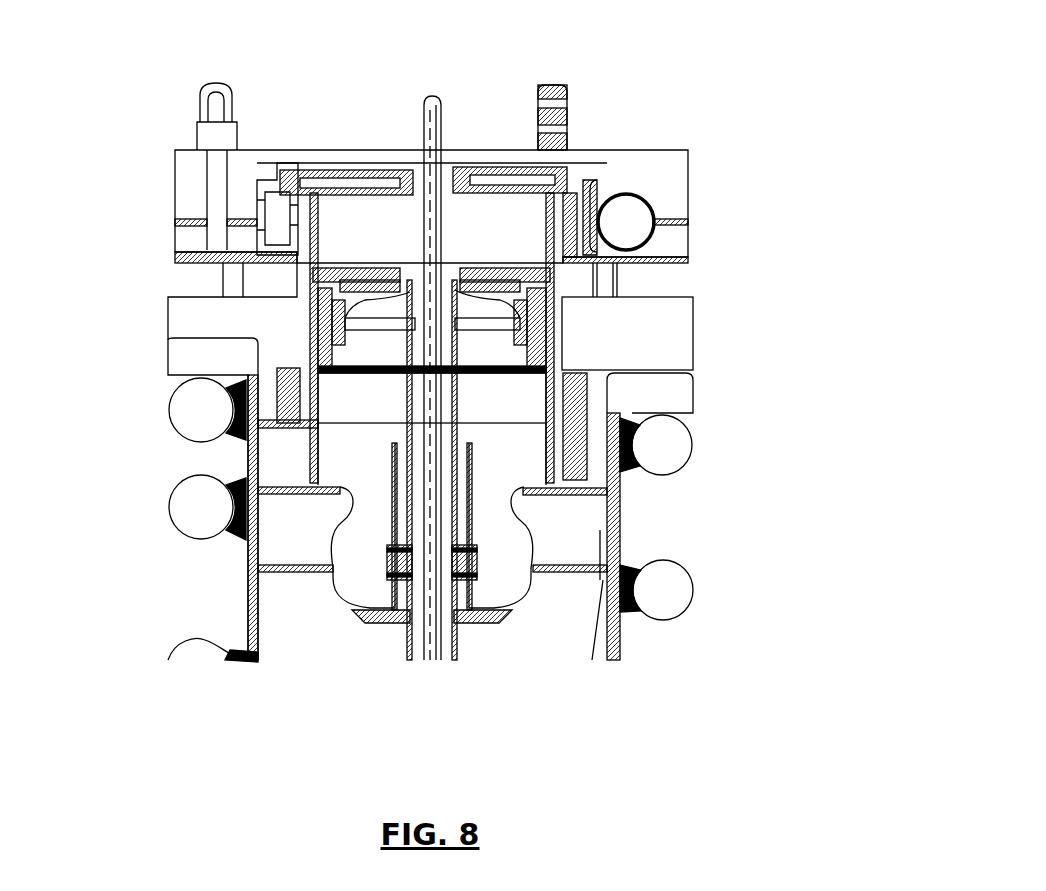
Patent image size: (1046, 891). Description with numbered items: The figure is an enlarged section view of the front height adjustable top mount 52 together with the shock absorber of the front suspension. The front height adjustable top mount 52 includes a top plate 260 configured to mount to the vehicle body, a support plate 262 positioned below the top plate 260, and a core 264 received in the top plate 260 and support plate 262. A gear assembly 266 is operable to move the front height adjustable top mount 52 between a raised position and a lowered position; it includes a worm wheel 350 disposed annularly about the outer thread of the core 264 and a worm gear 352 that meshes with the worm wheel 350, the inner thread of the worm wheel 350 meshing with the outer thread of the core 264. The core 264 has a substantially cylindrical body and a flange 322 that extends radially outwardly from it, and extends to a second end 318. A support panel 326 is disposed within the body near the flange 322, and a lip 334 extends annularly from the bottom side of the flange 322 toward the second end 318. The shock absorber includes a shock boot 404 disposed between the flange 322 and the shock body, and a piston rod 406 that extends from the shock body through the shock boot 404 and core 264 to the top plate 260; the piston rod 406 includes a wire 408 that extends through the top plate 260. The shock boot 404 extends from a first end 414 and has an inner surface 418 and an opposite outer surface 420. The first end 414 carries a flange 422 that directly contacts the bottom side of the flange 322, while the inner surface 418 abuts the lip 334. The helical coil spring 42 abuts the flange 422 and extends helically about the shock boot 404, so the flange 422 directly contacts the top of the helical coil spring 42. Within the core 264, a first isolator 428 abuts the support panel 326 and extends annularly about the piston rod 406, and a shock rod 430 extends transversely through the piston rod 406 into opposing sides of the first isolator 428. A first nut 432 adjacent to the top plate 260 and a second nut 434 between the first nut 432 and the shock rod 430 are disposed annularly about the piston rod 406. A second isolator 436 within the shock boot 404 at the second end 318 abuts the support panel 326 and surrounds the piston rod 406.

The front height adjustable top mount 52 is at (822, 153).
The top plate 260 is at (672, 173).
The support plate 262 is at (672, 238).
The core 264 is at (680, 322).
The gear assembly 266 is at (625, 183).
The second end 318 is at (620, 456).
The flange 322 is at (193, 305).
The support panel 326 is at (500, 398).
The lip 334 is at (267, 387).
The worm wheel 350 is at (276, 163).
The worm gear 352 is at (625, 220).
The shock boot 404 is at (250, 572).
The piston rod 406 is at (410, 620).
The wire 408 is at (440, 127).
The first end 414 is at (187, 352).
The inner surface 418 is at (268, 478).
The outer surface 420 is at (618, 508).
The flange 422 is at (672, 390).
The first isolator 428 is at (515, 288).
The shock rod 430 is at (503, 323).
The first nut 432 is at (407, 217).
The second nut 434 is at (463, 300).
The second isolator 436 is at (503, 583).
The helical coil spring 42 is at (683, 587).